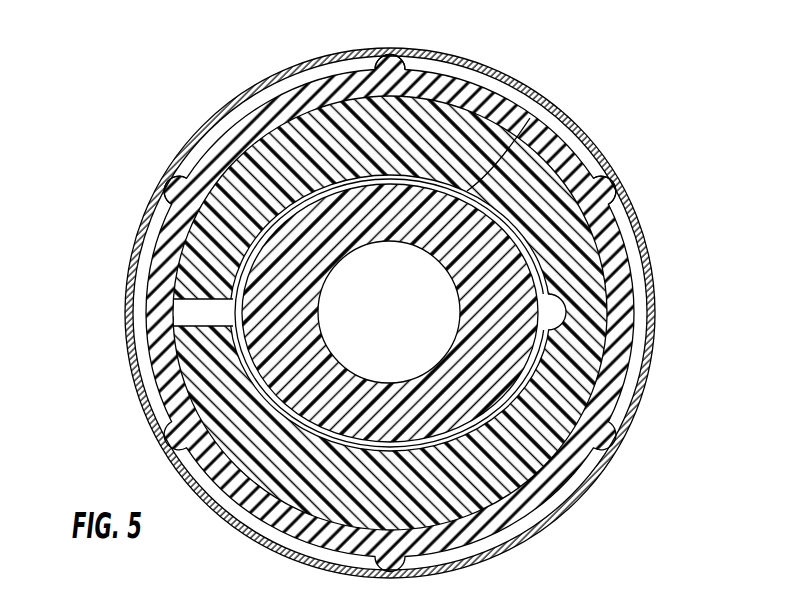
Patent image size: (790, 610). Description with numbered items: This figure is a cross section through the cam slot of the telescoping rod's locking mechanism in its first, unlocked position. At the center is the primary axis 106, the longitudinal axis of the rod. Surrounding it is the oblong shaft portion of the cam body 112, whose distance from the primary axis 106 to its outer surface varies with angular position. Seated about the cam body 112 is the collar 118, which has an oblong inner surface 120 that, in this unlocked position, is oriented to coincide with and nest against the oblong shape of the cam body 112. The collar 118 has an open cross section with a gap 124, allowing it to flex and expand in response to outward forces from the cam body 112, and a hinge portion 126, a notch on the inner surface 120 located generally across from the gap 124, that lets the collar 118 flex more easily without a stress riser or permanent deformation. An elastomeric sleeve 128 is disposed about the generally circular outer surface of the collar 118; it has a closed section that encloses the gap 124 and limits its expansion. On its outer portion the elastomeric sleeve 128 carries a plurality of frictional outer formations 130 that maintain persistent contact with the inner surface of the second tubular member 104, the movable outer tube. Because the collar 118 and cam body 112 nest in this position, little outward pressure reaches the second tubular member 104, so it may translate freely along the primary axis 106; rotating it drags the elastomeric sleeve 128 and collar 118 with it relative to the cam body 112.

The second elongate tubular member 104 is at (128, 268).
The primary axis 106 is at (390, 312).
The cam body 112 is at (500, 375).
The collar 118 is at (247, 153).
The inner surface 120 is at (527, 117).
The gap 124 is at (197, 301).
The hinge portion 126 is at (567, 303).
The elastomeric sleeve 128 is at (170, 215).
The frictional outer formations 130 is at (393, 48).